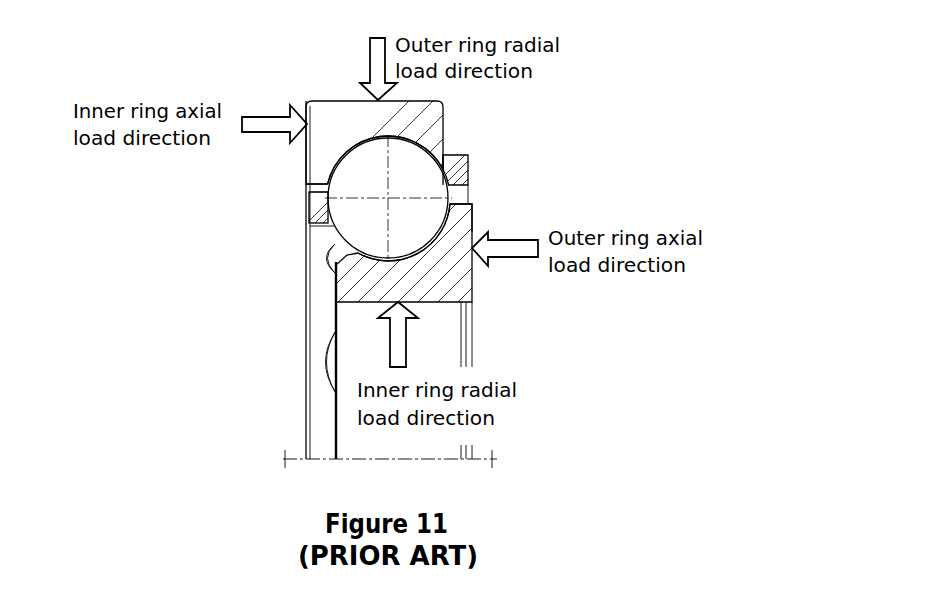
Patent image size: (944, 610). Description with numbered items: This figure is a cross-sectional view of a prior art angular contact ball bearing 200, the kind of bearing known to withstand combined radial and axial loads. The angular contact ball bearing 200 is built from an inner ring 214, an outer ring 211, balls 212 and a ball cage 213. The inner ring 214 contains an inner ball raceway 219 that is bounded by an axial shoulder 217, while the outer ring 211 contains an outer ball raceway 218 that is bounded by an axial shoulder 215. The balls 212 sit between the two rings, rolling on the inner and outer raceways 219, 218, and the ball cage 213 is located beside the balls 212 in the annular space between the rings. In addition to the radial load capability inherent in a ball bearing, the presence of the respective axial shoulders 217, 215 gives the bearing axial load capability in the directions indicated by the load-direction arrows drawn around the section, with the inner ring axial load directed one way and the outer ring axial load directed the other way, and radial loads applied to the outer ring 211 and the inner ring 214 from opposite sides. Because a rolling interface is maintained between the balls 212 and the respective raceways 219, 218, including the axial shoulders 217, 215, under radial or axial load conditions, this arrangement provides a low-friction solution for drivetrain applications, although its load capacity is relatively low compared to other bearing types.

The angular contact ball bearing 200 is at (578, 138).
The outer ring 211 is at (427, 118).
The balls 212 is at (358, 222).
The ball cage 213 is at (315, 205).
The inner ring 214 is at (463, 296).
The axial shoulder 215 is at (320, 178).
The axial shoulder 217 is at (463, 216).
The outer ball raceway 218 is at (353, 143).
The inner ball raceway 219 is at (405, 260).